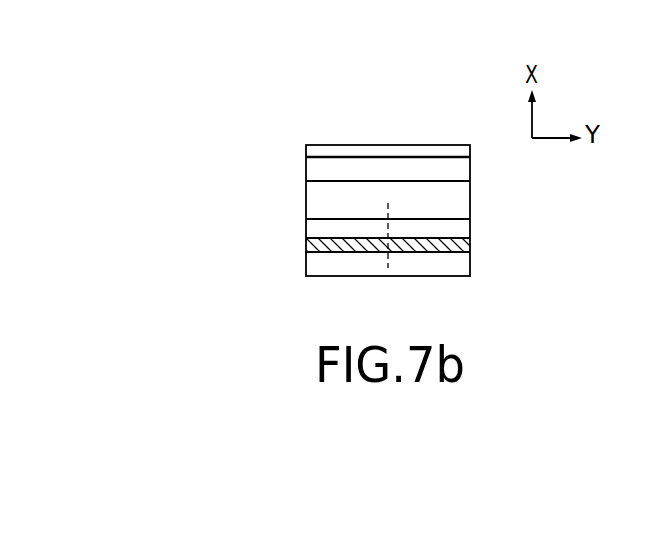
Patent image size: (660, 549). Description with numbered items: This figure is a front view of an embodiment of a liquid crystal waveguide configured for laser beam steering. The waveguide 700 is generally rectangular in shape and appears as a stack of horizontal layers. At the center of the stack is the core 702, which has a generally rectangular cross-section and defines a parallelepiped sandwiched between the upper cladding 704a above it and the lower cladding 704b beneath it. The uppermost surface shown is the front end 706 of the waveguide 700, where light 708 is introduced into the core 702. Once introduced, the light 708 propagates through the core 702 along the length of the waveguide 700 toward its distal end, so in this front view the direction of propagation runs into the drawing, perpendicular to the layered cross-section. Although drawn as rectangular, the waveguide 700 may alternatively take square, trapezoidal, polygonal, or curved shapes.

The waveguide 700 is at (252, 166).
The core 702 is at (463, 197).
The upper cladding 704a is at (463, 168).
The lower cladding 704b is at (463, 225).
The front end 706 is at (320, 148).
The light 708 is at (375, 252).